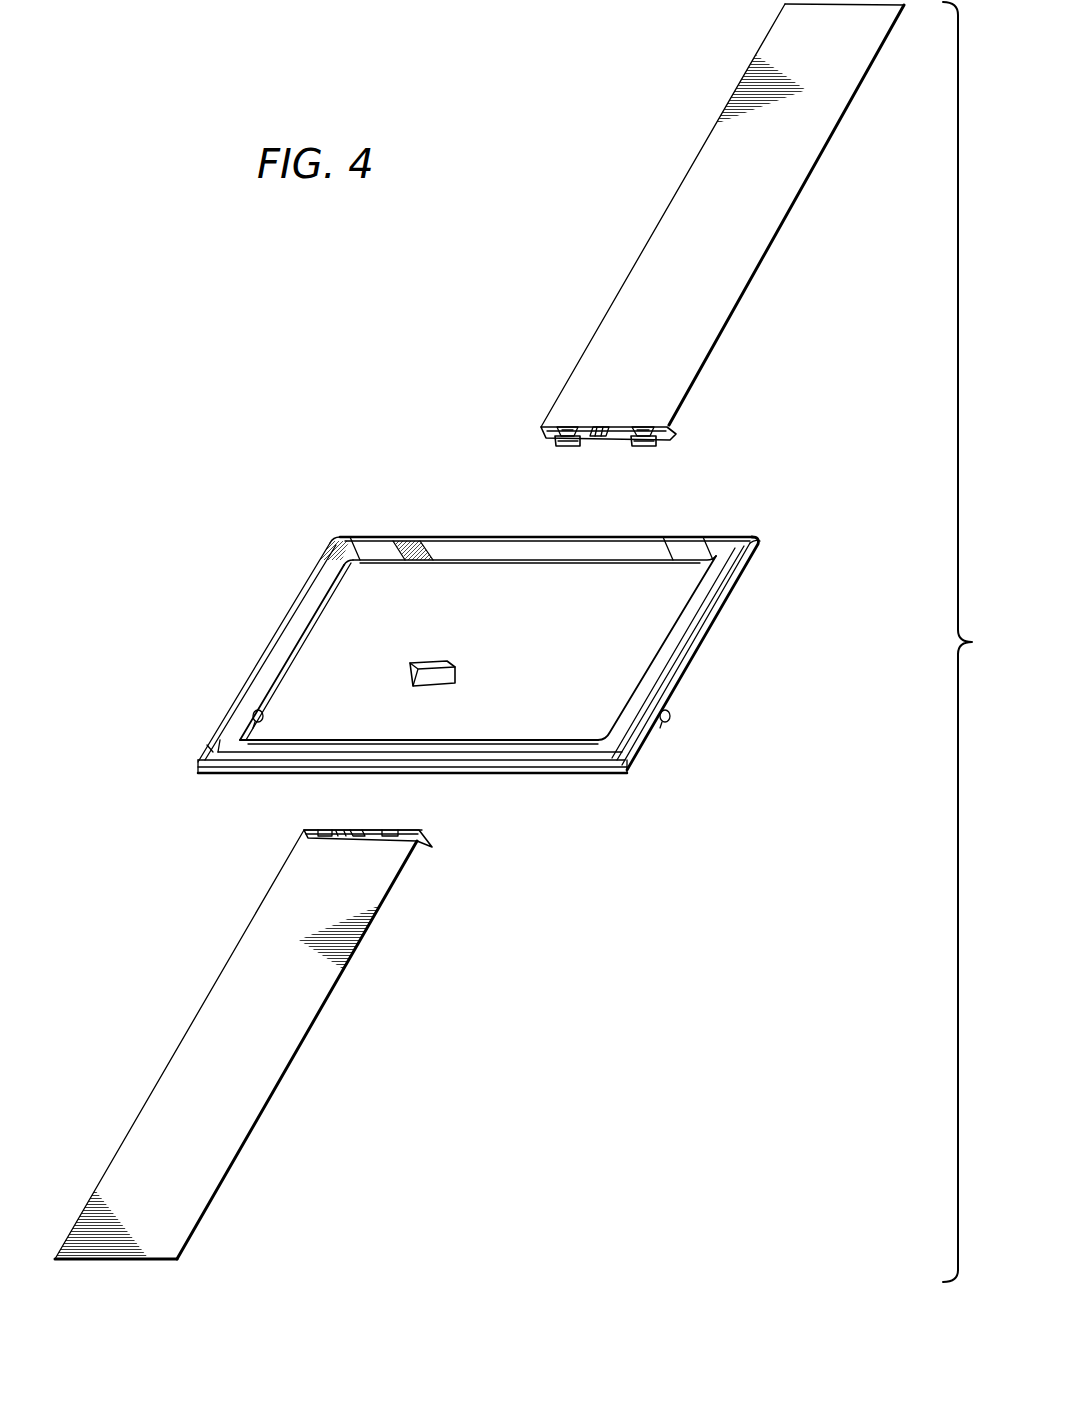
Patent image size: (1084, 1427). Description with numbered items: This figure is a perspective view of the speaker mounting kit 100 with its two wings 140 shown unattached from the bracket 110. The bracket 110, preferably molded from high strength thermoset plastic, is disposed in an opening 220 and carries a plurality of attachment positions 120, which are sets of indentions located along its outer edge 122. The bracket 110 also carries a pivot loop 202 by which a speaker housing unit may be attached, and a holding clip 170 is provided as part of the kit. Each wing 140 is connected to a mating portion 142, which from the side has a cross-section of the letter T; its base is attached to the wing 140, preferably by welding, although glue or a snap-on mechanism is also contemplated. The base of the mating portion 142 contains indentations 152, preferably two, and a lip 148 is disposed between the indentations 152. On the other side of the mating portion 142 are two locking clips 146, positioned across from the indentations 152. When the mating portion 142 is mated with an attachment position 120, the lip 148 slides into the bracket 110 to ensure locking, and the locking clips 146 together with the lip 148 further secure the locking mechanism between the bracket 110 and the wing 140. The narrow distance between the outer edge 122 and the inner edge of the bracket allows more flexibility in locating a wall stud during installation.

The speaker mounting kit 100 is at (348, 388).
The bracket 110 is at (742, 544).
The attachment positions 120 is at (412, 535).
The outer edge 122 is at (700, 648).
The wing 140 is at (786, 189).
The mating portion 142 is at (664, 432).
The locking clips 146 is at (568, 448).
The lip 148 is at (598, 427).
The indentations 152 is at (566, 428).
The holding clip 170 is at (410, 677).
The pivot loop 202 is at (673, 719).
The opening 220 is at (640, 638).